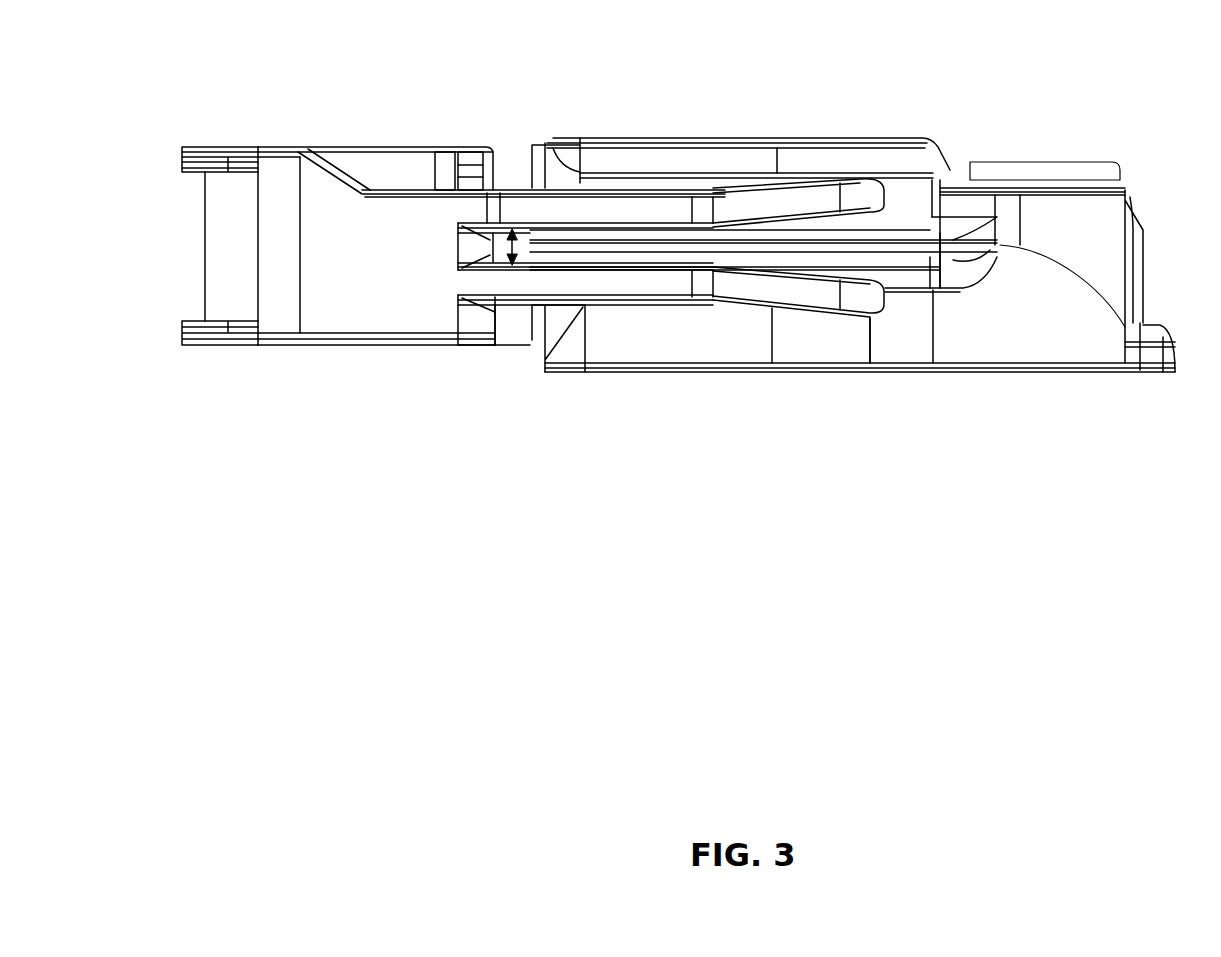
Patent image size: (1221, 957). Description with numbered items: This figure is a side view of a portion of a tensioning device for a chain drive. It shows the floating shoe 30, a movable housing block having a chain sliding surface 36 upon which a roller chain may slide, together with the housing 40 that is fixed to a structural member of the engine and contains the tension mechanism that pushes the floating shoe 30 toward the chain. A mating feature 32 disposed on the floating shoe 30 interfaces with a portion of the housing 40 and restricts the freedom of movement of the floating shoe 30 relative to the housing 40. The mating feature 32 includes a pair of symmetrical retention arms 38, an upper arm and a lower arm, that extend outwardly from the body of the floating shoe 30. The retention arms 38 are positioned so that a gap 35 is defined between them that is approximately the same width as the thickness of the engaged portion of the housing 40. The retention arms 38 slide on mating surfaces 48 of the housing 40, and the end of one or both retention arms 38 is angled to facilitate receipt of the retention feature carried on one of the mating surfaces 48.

The floating shoe 30 is at (285, 147).
The mating feature 32 is at (512, 305).
The gap 35 is at (512, 231).
The chain sliding surface 36 is at (205, 287).
The retention arms 38 is at (857, 180).
The housing 40 is at (1125, 197).
The mating surfaces 48 is at (915, 227).